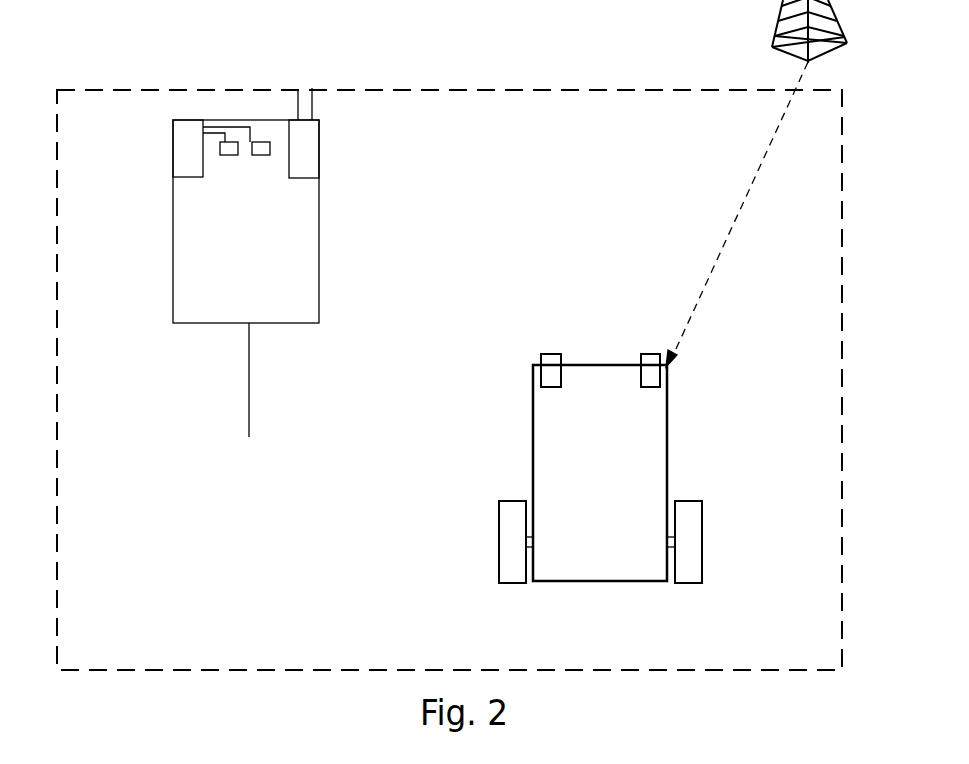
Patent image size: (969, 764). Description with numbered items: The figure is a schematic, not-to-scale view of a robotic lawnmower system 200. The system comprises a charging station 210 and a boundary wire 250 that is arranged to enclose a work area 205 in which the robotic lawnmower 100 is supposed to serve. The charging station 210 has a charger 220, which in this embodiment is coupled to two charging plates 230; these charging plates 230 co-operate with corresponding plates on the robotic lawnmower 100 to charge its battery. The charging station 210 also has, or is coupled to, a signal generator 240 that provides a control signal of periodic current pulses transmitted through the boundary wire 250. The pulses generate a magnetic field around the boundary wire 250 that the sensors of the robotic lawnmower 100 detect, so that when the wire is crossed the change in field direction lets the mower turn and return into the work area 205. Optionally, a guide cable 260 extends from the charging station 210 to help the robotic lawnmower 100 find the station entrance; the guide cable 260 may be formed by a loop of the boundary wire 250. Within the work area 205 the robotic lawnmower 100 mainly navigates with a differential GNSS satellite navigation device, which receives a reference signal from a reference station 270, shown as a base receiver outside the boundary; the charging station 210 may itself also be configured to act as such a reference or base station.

The robotic lawnmower 100 is at (667, 494).
The robotic lawnmower system 200 is at (241, 179).
The work area 205 is at (421, 428).
The charging station 210 is at (173, 180).
The charger 220 is at (184, 129).
The charging plates 230 is at (228, 143).
The signal generator 240 is at (319, 163).
The boundary wire 250 is at (815, 669).
The guide cable 260 is at (249, 360).
The reference station 270 is at (760, 0).